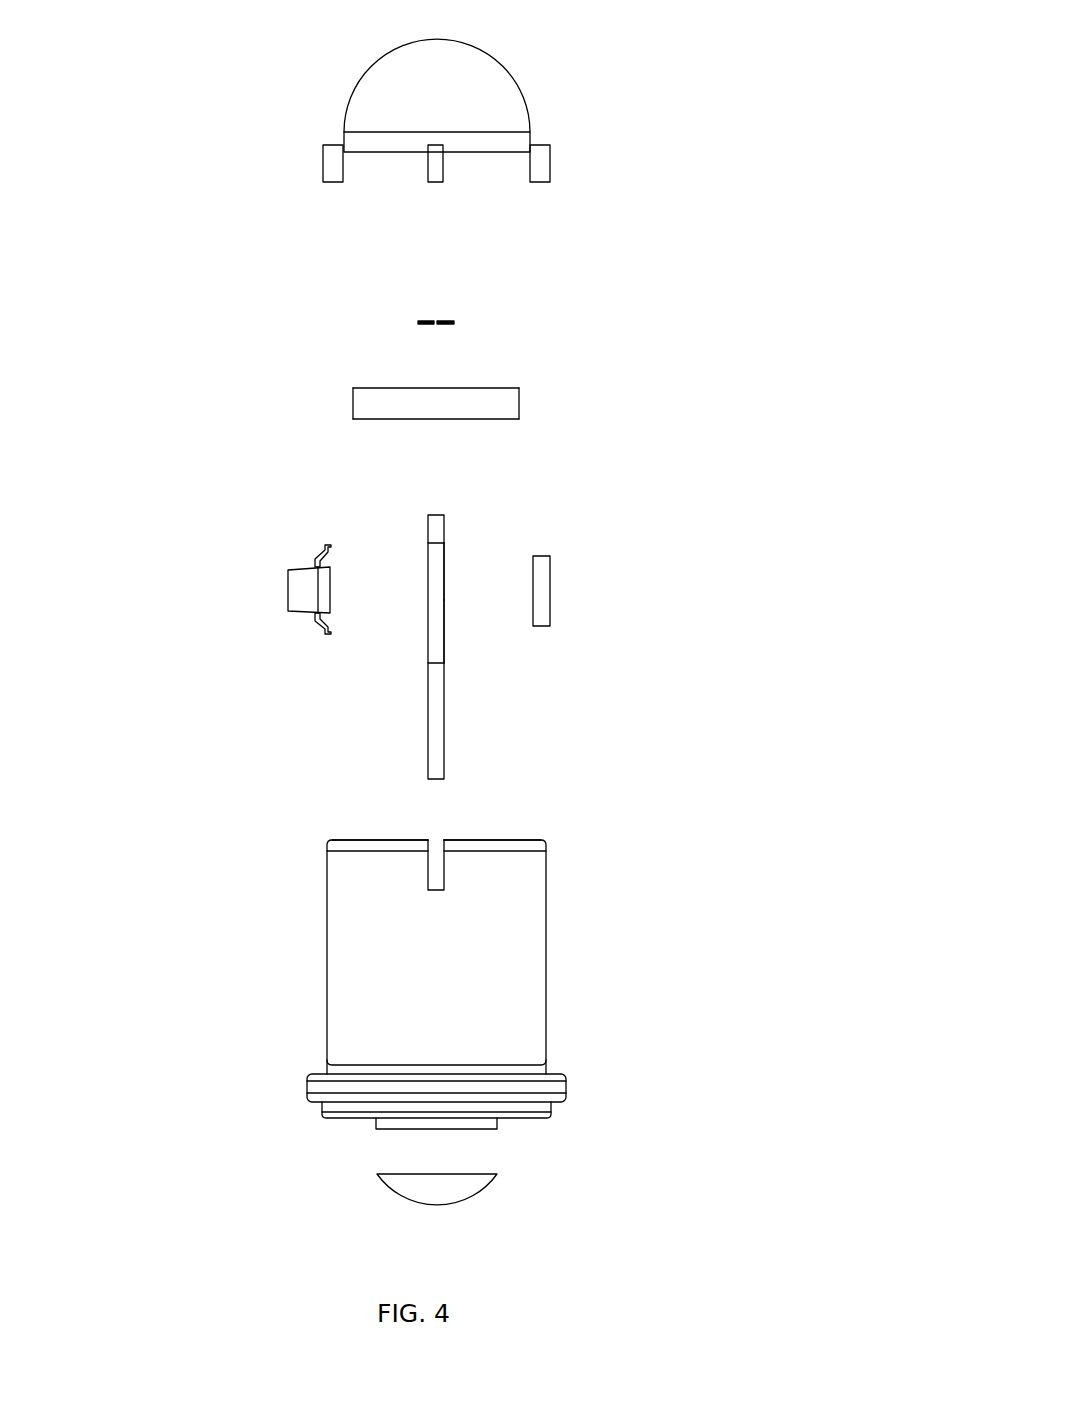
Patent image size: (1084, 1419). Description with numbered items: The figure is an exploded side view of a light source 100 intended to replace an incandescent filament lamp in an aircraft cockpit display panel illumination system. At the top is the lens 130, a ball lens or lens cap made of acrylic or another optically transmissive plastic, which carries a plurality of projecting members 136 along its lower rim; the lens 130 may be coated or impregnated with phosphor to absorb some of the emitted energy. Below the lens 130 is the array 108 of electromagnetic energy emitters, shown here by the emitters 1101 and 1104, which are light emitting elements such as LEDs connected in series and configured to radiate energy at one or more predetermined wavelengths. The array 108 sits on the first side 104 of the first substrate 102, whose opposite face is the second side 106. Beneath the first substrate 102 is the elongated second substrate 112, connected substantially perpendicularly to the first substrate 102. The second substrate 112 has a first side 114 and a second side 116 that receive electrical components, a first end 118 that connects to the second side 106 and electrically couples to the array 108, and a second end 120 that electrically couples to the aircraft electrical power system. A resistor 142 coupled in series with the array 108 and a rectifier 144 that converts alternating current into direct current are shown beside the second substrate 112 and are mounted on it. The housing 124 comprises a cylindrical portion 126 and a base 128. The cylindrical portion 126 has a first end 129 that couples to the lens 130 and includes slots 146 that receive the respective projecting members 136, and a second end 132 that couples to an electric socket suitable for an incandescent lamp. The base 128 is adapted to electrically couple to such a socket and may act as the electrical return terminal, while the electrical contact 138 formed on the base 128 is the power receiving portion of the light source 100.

The light source 100 is at (502, 632).
The first substrate 102 is at (466, 405).
The first side 104 is at (370, 387).
The second side 106 is at (370, 420).
The array 108 is at (445, 263).
The electromagnetic energy emitter 1101 is at (420, 322).
The electromagnetic energy emitter 1104 is at (453, 322).
The second substrate 112 is at (445, 563).
The first side 114 is at (444, 647).
The second side 116 is at (445, 650).
The first end 118 is at (437, 513).
The second end 120 is at (437, 780).
The housing 124 is at (463, 975).
The cylindrical portion 126 is at (400, 902).
The base 128 is at (563, 1088).
The first end 129 is at (402, 785).
The lens 130 is at (473, 52).
The second end 132 is at (407, 1161).
The projecting members 136 is at (323, 163).
The electrical contact 138 is at (437, 1198).
The resistor 142 is at (550, 592).
The rectifier 144 is at (288, 592).
The slots 146 is at (446, 867).